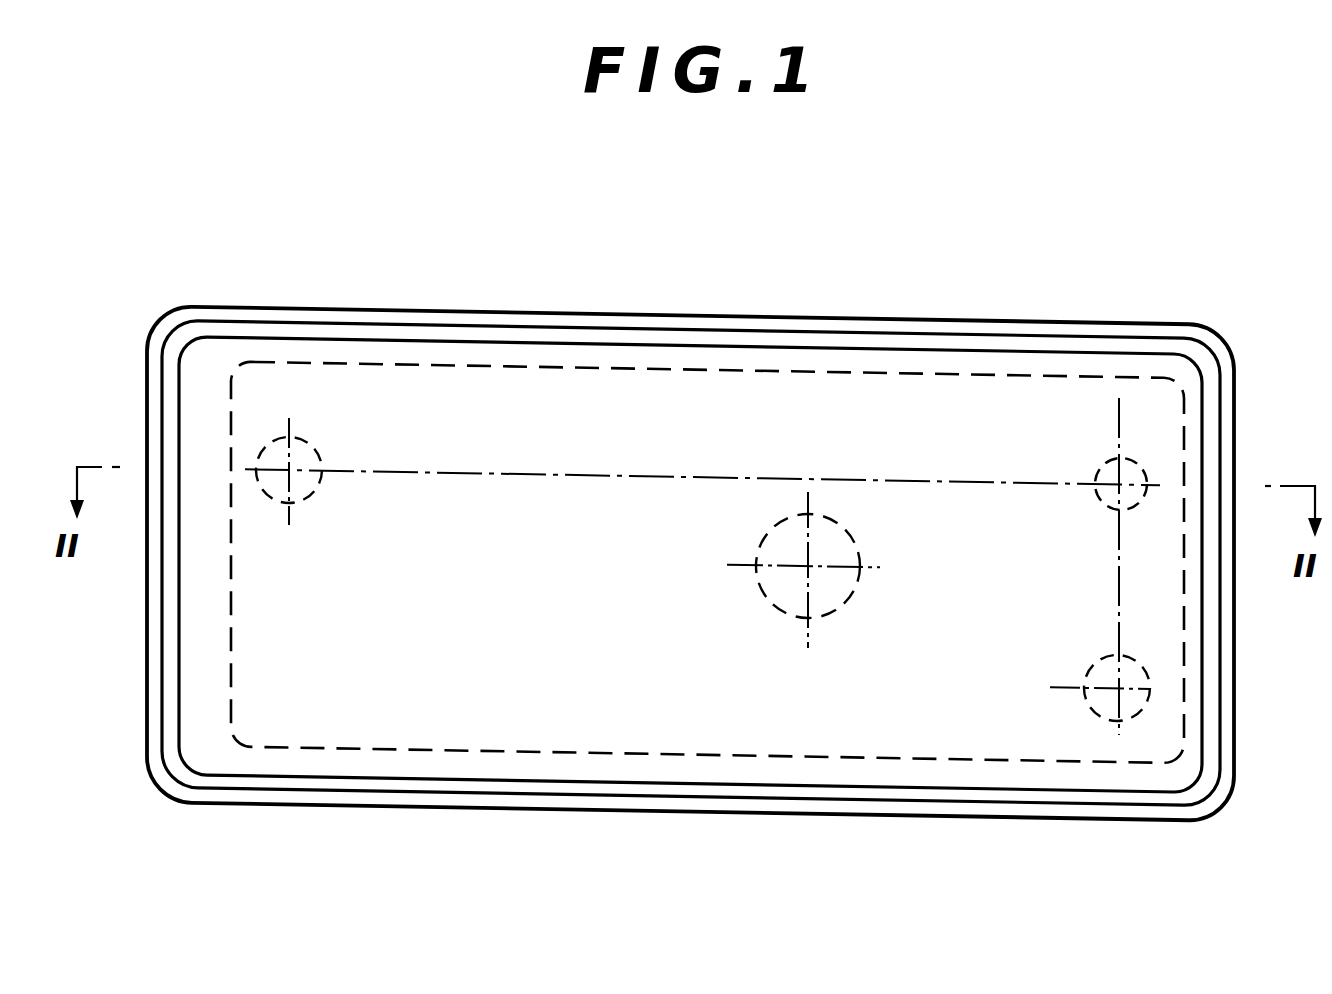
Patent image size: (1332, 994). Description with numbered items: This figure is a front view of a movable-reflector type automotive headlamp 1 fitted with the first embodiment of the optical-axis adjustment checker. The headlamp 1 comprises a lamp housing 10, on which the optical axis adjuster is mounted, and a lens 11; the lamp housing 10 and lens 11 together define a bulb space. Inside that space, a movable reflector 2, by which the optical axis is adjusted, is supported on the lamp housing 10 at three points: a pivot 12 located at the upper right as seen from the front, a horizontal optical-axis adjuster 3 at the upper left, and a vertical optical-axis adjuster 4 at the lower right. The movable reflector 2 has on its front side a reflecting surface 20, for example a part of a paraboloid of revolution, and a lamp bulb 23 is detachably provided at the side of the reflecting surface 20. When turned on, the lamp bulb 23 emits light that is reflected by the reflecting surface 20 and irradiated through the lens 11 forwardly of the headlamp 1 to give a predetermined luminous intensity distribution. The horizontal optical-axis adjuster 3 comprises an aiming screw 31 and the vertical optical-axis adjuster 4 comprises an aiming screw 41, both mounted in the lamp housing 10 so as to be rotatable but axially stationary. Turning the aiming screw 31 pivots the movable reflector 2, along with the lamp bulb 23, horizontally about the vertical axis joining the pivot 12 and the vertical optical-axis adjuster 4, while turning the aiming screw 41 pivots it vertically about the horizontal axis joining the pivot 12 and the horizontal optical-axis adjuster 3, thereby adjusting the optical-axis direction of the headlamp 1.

The automotive headlamp 1 is at (655, 317).
The lamp housing 10 is at (587, 327).
The lens 11 is at (486, 343).
The movable reflector 2 is at (898, 375).
The reflecting surface 20 is at (716, 394).
The horizontal optical-axis adjuster 3 is at (312, 447).
The aiming screw 31 is at (289, 471).
The lamp bulb 23 is at (782, 521).
The pivot 12 is at (1103, 466).
The vertical optical-axis adjuster 4 is at (1094, 711).
The aiming screw 41 is at (1100, 688).